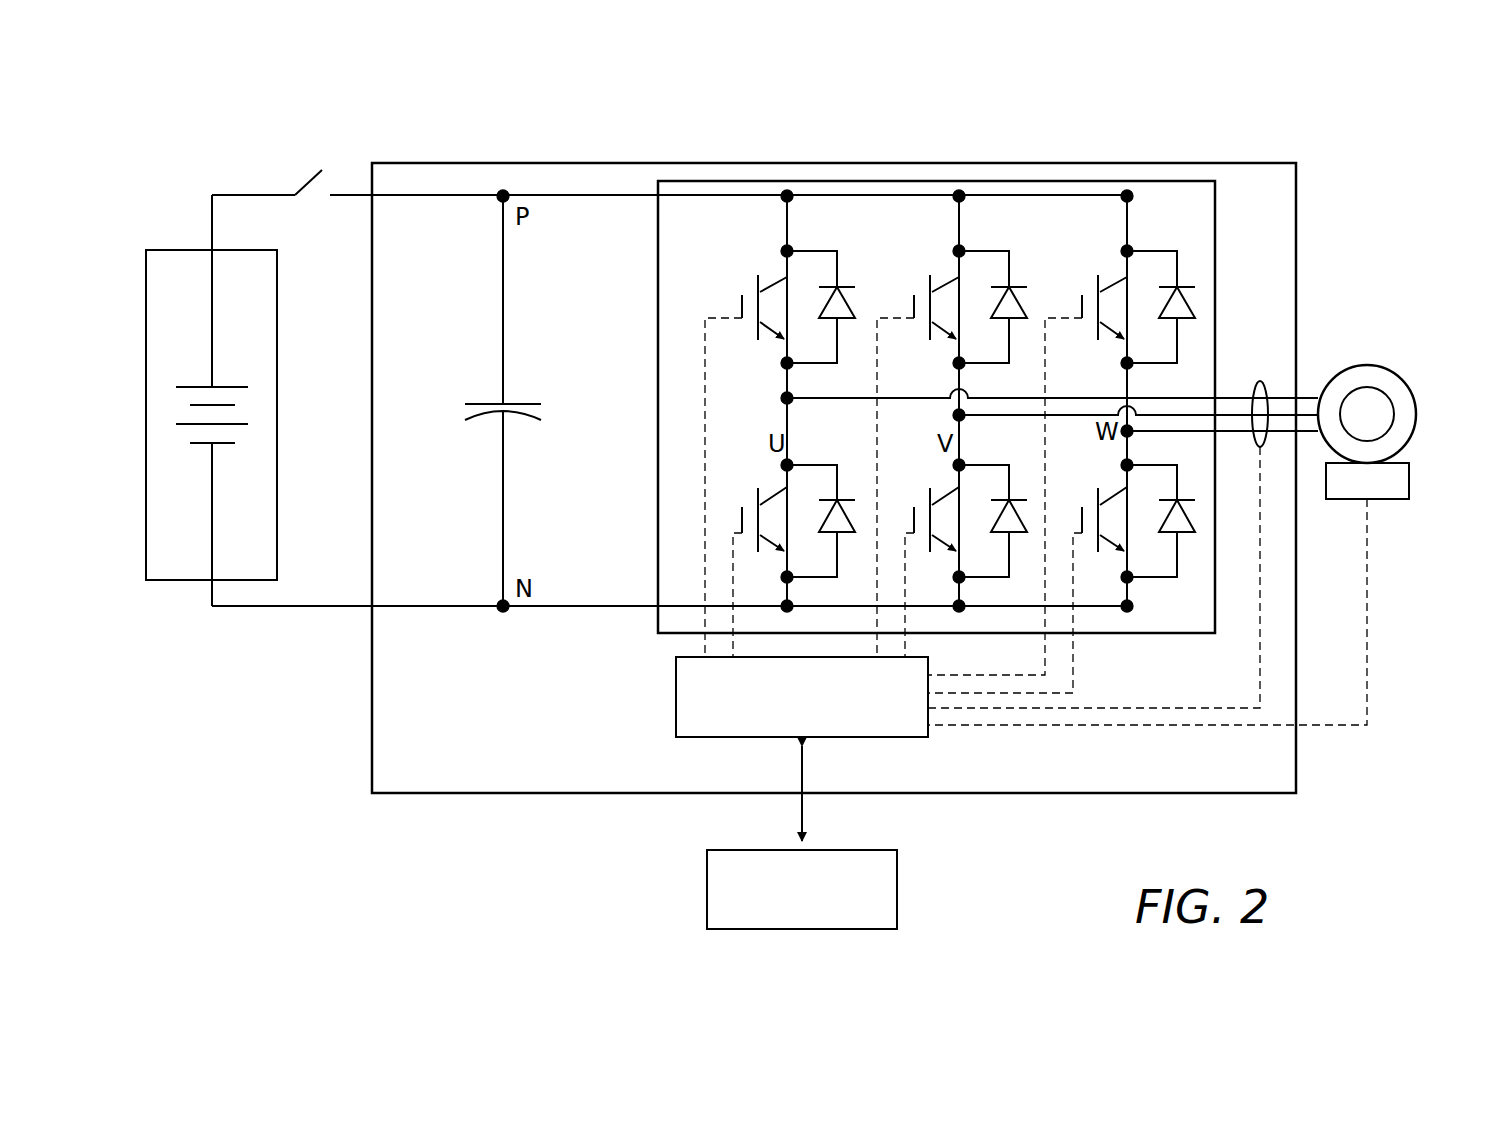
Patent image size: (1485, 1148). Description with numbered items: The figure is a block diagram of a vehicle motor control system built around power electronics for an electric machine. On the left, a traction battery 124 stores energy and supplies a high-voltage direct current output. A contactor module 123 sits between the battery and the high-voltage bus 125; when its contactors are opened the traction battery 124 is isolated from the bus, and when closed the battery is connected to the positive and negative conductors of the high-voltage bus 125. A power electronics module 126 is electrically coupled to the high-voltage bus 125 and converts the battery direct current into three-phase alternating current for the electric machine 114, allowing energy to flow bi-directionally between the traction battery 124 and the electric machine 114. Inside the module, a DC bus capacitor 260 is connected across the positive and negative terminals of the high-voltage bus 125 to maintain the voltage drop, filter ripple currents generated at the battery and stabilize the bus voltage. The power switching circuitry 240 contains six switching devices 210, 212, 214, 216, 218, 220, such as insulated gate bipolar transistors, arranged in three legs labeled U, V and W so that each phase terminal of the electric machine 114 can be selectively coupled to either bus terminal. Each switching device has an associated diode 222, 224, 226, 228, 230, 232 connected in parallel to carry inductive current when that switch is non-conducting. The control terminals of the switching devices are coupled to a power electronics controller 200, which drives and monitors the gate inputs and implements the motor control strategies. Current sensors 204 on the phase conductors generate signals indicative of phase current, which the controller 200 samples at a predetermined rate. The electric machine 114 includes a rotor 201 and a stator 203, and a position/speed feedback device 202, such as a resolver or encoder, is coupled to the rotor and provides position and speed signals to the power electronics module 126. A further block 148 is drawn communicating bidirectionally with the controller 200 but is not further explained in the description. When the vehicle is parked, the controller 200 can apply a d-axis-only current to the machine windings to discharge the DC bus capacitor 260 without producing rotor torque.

The electric machine 114 is at (1398, 365).
The contactor module 123 is at (313, 200).
The traction battery 124 is at (165, 250).
The high-voltage bus 125 is at (270, 195).
The power electronics module 126 is at (750, 163).
The universal serial controller (USC) 148 is at (707, 868).
The power electronics controller 200 is at (676, 675).
The rotor 201 is at (1385, 395).
The position/speed feedback device 202 is at (1393, 500).
The stator 203 is at (1385, 370).
The current sensor 204 is at (1260, 382).
The switching device 210 is at (758, 280).
The switching device 212 is at (757, 497).
The switching device 214 is at (929, 283).
The switching device 216 is at (929, 497).
The switching device 218 is at (1097, 283).
The switching device 220 is at (1097, 497).
The diode 222 is at (845, 287).
The diode 224 is at (850, 498).
The diode 226 is at (1018, 287).
The diode 228 is at (1020, 498).
The diode 230 is at (1185, 287).
The diode 232 is at (1188, 498).
The power switching circuitry 240 is at (1166, 180).
The DC bus capacitor 260 is at (482, 403).